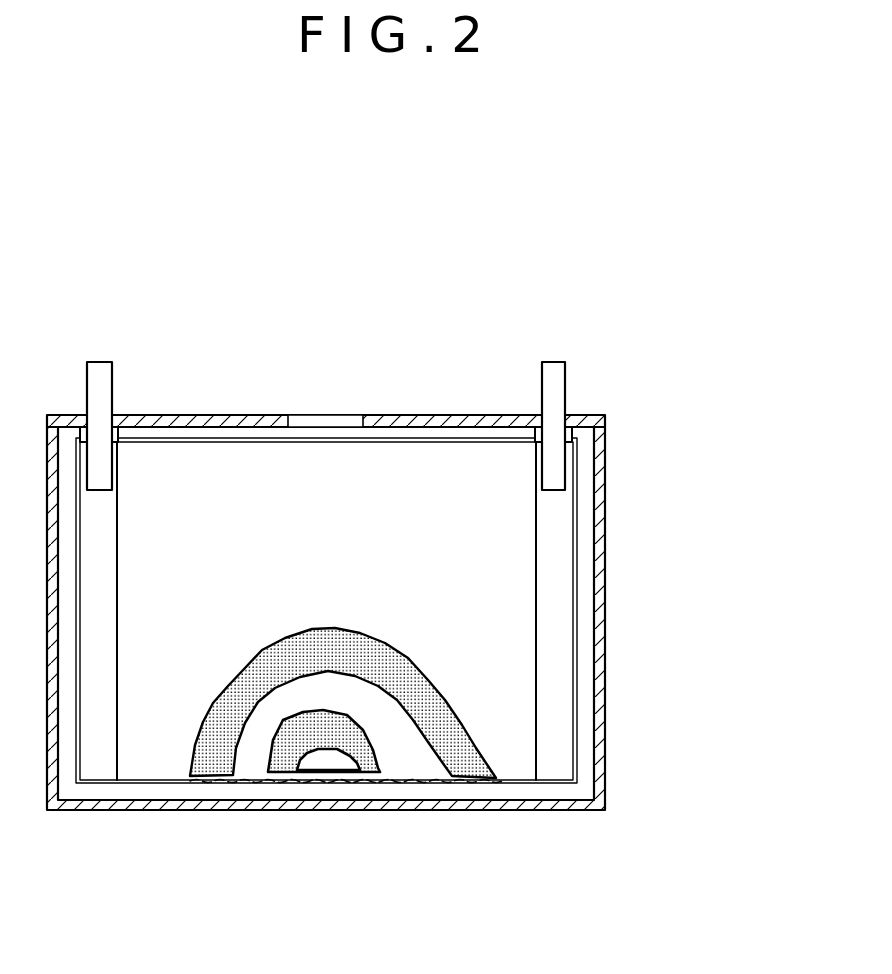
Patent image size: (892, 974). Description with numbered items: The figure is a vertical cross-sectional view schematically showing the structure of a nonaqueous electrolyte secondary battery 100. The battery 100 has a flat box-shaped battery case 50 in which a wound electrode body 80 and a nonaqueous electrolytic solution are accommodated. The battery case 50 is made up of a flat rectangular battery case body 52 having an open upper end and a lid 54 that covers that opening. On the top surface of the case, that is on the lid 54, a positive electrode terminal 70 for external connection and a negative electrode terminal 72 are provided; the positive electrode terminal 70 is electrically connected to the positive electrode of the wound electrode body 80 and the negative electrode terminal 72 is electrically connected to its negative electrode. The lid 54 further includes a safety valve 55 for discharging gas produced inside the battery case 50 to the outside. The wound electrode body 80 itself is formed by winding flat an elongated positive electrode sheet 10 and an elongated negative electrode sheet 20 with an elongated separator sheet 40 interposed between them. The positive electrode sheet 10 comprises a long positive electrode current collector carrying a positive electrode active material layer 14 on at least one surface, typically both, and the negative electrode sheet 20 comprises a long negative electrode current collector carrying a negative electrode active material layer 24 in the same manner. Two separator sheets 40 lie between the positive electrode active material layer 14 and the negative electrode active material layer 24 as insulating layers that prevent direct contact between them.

The nonaqueous electrolyte secondary battery 100 is at (389, 505).
The battery case 50 is at (389, 571).
The battery case body 52 is at (606, 608).
The lid 54 is at (326, 379).
The safety valve 55 is at (317, 425).
The positive electrode terminal 70 is at (96, 365).
The negative electrode terminal 72 is at (552, 378).
The positive electrode sheet 10 is at (330, 774).
The positive electrode active material layer 14 is at (212, 762).
The negative electrode sheet 20 is at (324, 815).
The negative electrode active material layer 24 is at (292, 762).
The separator sheet 40 is at (148, 760).
The wound electrode body 80 is at (513, 786).